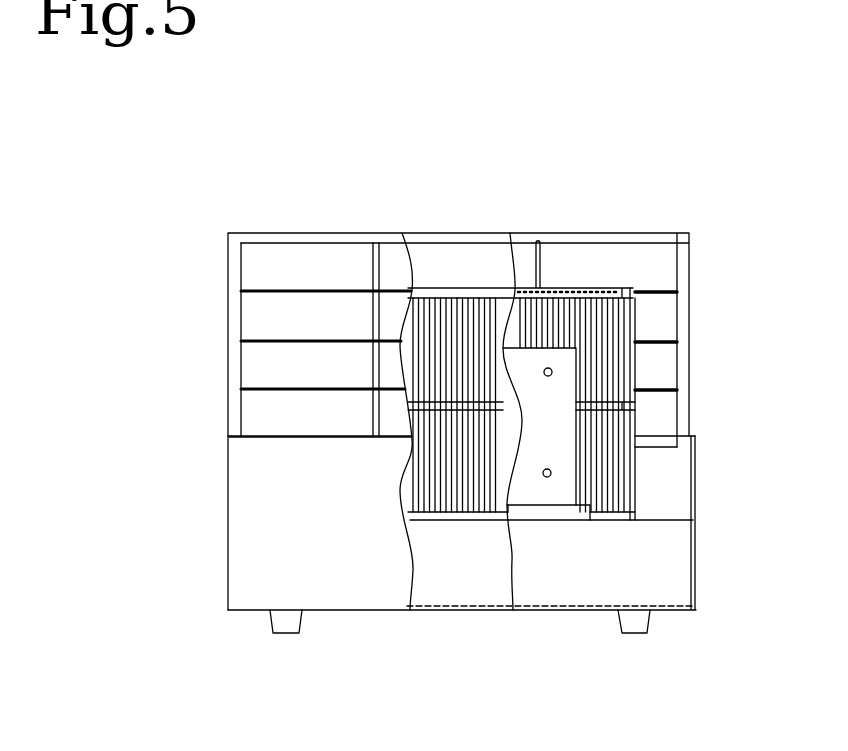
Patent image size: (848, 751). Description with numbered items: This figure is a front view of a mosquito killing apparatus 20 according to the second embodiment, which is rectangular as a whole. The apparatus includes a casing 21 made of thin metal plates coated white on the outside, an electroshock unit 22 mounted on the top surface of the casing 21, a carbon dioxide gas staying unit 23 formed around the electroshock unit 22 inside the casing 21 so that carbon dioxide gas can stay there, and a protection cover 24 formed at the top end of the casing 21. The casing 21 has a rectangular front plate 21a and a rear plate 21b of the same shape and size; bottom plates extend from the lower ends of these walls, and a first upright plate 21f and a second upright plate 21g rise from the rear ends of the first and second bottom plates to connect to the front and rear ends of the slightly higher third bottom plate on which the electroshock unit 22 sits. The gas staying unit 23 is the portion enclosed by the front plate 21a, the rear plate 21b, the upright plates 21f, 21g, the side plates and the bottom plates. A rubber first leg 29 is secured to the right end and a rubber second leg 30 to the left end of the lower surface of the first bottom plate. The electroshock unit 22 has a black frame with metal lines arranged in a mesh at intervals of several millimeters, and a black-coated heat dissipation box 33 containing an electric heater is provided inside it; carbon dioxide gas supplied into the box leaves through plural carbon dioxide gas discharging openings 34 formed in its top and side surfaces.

The mosquito killing apparatus 20 is at (234, 207).
The casing 21 is at (222, 477).
The front plate 21a is at (248, 534).
The rear plate 21b is at (678, 498).
The first upright plate 21f is at (478, 587).
The second upright plate 21g is at (580, 582).
The electroshock unit 22 is at (585, 300).
The carbon dioxide gas staying unit 23 is at (676, 568).
The protection cover 24 is at (333, 233).
The first leg 29 is at (640, 627).
The second leg 30 is at (286, 625).
The heat dissipation box 33 is at (560, 392).
The carbon dioxide gas discharging openings 34 is at (548, 377).